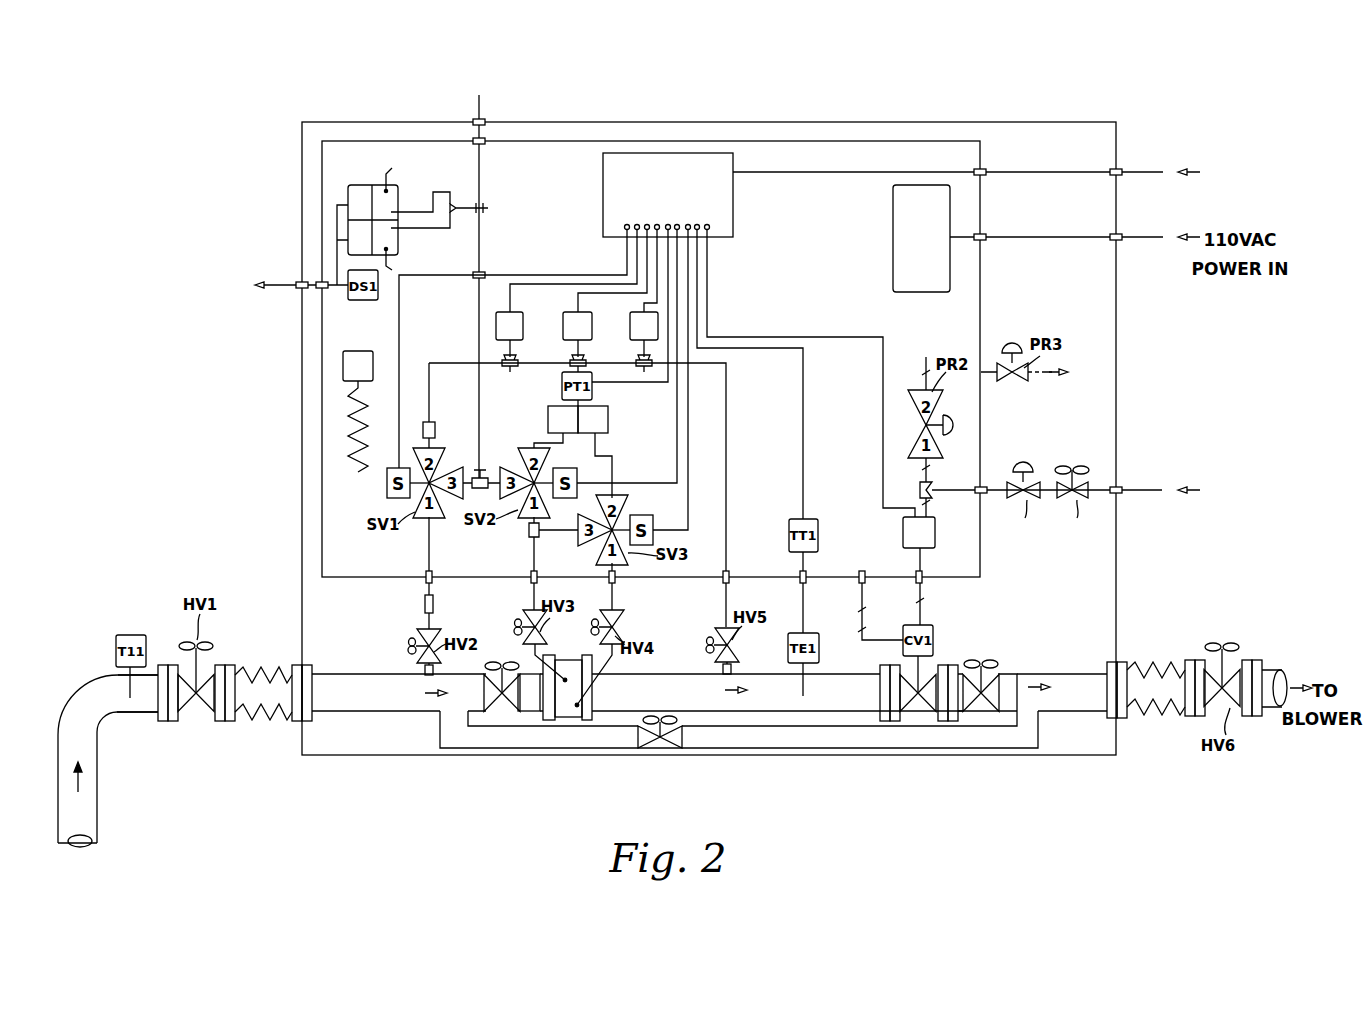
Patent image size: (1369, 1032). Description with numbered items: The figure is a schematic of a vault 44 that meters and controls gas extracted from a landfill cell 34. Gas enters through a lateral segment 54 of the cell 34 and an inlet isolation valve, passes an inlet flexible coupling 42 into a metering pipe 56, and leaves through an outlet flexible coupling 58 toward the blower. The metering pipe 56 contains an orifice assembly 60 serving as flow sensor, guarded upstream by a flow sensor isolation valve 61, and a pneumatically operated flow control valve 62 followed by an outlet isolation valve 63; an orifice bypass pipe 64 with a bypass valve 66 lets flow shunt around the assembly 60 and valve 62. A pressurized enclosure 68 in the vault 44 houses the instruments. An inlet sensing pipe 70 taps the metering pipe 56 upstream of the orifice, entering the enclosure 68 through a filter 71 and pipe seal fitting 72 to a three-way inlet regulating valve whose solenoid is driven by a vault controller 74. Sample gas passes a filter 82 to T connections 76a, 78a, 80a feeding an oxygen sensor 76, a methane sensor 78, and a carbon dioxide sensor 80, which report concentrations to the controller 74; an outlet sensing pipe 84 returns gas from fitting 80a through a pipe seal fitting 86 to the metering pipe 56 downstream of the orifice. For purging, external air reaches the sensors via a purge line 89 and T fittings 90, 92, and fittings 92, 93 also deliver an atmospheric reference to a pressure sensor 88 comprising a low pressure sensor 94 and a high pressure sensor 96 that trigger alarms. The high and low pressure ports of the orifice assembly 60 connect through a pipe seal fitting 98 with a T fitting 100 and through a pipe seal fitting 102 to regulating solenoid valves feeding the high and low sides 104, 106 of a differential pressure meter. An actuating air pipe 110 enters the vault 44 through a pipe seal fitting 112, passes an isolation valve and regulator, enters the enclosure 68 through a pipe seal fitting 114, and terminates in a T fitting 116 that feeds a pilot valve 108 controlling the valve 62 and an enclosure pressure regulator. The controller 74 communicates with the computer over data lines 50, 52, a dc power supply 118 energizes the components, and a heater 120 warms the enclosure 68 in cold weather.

The cell 34 is at (97, 798).
The inlet flexible coupling 42 is at (268, 718).
The vault 44 is at (1245, 157).
The data line 50 is at (1023, 160).
The data line 52 is at (1133, 172).
The lateral segment 54 is at (137, 714).
The metering pipe 56 is at (346, 700).
The outlet flexible coupling 58 is at (1148, 710).
The orifice assembly 60 is at (598, 720).
The flow sensor isolation valve 61 is at (512, 704).
The fluid flow control valve 62 is at (910, 702).
The flow control valve outlet isolation valve 63 is at (988, 702).
The orifice bypass pipe 64 is at (718, 738).
The bypass valve 66 is at (675, 746).
The pressurized enclosure 68 is at (330, 515).
The inlet gas concentration and vacuum sensing pipe 70 is at (425, 672).
The filter 71 is at (425, 605).
The pipe seal fitting 72 is at (427, 577).
The vault controller 74 is at (737, 212).
The first gas concentration sensor 76 is at (524, 326).
The T connection 76a is at (510, 369).
The second gas concentration sensor 78 is at (566, 338).
The T connection 78a is at (576, 368).
The third gas concentration sensor 80 is at (634, 314).
The T connection 80a is at (642, 364).
The filter 82 is at (434, 428).
The outlet gas concentration and vacuum sensing pipe 84 is at (728, 438).
The pipe seal fitting 86 is at (729, 574).
The pressure sensor 88 is at (364, 185).
The purge line 89 is at (479, 340).
The T fitting 90 is at (479, 474).
The T fitting 92 is at (486, 209).
The T fitting 93 is at (452, 203).
The low pressure sensor 94 is at (393, 210).
The high pressure sensor 96 is at (394, 228).
The pipe seal fitting 98 is at (532, 578).
The T fitting 100 is at (528, 533).
The pipe seal fitting 102 is at (614, 580).
The high side of differential pressure meter 104 is at (548, 420).
The low side of differential pressure meter 106 is at (608, 420).
The pilot valve 108 is at (935, 530).
The actuating air pipe 110 is at (1066, 480).
The pipe seal fitting 112 is at (1120, 488).
The pipe seal fitting 114 is at (983, 485).
The T fitting 116 is at (920, 495).
The dc power supply 118 is at (893, 250).
The heater 120 is at (360, 351).